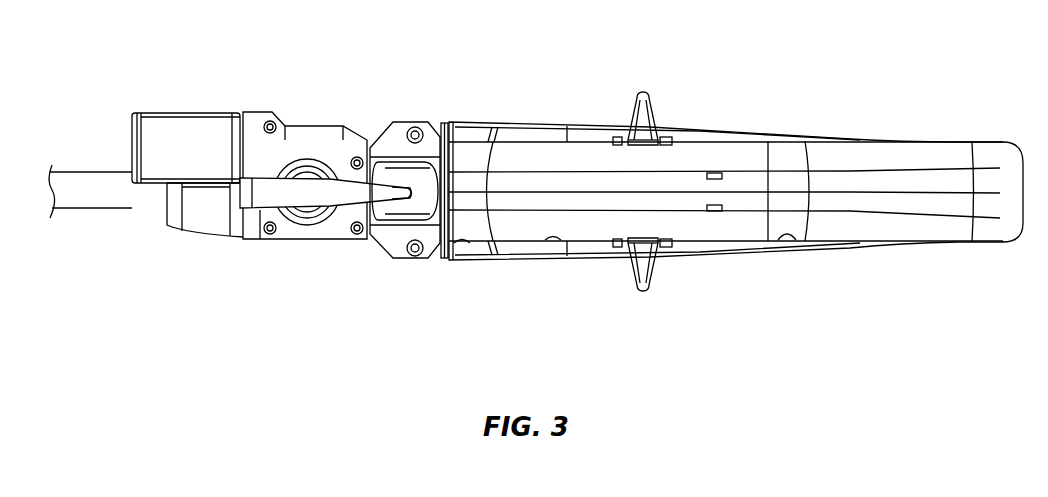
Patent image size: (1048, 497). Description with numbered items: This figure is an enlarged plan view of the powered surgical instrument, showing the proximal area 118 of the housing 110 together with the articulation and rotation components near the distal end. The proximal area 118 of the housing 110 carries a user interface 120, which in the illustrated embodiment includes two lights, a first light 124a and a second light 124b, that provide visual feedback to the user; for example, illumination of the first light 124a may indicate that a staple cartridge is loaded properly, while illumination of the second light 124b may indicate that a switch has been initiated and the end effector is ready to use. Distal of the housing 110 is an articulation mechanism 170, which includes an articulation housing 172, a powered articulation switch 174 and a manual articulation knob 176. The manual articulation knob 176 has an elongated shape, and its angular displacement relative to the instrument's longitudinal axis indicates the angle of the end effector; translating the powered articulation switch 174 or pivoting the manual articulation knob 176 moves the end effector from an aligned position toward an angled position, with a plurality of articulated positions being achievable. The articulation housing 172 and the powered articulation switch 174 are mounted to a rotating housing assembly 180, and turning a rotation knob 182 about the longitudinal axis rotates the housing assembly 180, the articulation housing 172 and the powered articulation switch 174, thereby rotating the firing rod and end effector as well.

The proximal area 118 is at (536, 164).
The housing 110 is at (895, 237).
The user interface 120 is at (737, 184).
The first light 124a is at (715, 212).
The second light 124b is at (715, 170).
The articulation mechanism 170 is at (220, 93).
The articulation housing 172 is at (297, 240).
The powered articulation switch 174 is at (647, 89).
The manual articulation knob 176 is at (303, 185).
The rotating housing assembly 180 is at (361, 265).
The rotation knob 182 is at (409, 263).